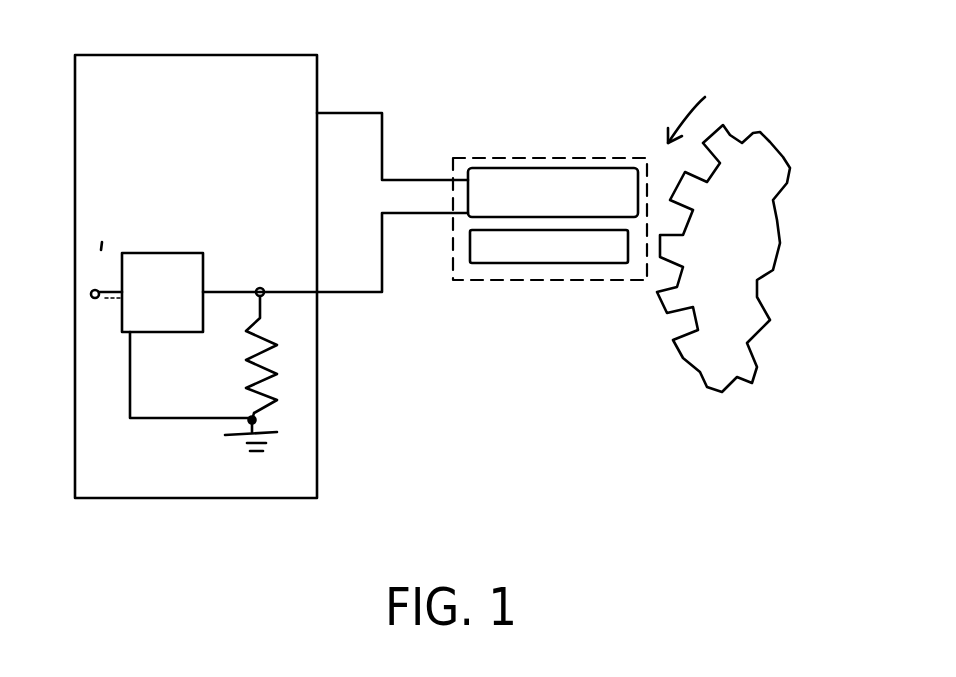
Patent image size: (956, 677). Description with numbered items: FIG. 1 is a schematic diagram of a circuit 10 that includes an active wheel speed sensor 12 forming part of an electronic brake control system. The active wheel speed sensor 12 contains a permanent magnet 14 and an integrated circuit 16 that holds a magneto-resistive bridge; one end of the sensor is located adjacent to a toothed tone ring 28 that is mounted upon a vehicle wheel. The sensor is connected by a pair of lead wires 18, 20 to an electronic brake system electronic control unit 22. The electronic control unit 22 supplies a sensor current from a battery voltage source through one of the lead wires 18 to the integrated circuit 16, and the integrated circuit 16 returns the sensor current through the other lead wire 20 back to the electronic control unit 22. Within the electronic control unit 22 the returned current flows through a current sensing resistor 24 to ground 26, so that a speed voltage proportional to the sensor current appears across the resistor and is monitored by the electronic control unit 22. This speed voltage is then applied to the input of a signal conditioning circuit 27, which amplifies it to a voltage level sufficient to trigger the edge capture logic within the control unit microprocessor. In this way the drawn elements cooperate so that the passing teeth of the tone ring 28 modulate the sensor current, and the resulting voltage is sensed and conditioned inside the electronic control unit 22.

The circuit 10 is at (600, 43).
The active wheel speed sensor 12 is at (467, 280).
The permanent magnet 14 is at (533, 253).
The integrated circuit 16 is at (528, 180).
The lead wire 18 is at (352, 112).
The lead wire 20 is at (355, 293).
The Electronic Control Unit 22 is at (218, 70).
The current sensing resistor 24 is at (236, 372).
The ground 26 is at (233, 447).
The signal conditioning circuit 27 is at (152, 258).
The toothed tone ring 28 is at (745, 258).